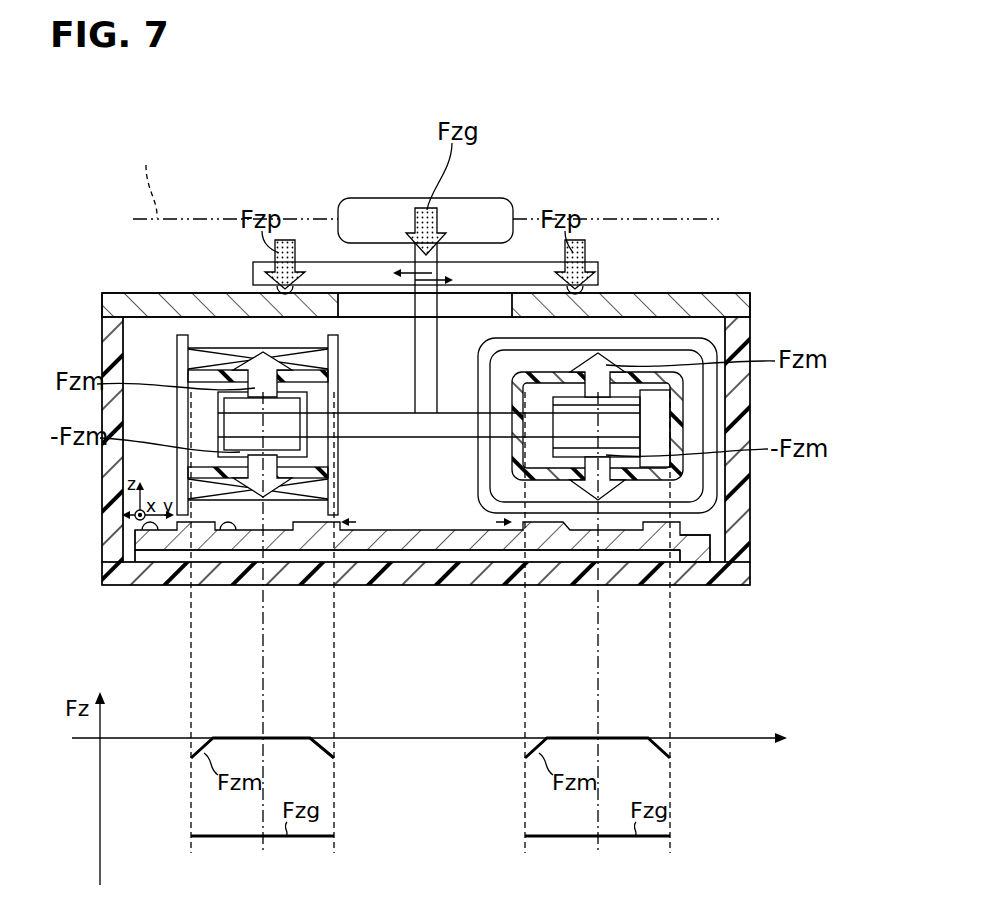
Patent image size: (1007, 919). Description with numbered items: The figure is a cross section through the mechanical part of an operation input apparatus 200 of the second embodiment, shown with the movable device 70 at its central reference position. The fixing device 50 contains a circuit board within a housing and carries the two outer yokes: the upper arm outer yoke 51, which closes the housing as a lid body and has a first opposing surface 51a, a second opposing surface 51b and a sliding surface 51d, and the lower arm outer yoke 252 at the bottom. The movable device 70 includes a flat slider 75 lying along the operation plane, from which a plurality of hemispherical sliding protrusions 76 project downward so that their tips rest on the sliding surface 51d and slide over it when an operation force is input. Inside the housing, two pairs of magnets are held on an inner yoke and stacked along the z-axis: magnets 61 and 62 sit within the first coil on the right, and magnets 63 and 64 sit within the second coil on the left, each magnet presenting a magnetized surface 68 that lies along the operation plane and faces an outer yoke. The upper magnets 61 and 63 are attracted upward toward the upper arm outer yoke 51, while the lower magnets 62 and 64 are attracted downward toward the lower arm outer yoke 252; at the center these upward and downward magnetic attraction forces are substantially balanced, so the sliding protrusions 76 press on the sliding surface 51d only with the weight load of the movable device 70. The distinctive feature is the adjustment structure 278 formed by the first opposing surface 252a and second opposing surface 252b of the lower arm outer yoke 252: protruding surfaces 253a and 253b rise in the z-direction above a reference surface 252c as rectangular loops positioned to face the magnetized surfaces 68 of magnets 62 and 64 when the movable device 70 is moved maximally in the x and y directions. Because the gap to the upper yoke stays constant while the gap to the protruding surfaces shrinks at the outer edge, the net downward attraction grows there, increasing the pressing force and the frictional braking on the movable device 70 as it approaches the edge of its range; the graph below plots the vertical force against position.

The fixing device 50 is at (108, 587).
The upper arm outer yoke 51 is at (110, 292).
The first opposing surface 51a is at (521, 321).
The second opposing surface 51b is at (310, 320).
The sliding surface 51d is at (629, 293).
The magnet 61 is at (640, 393).
The magnet 62 is at (568, 453).
The magnet 63 is at (222, 399).
The magnet 64 is at (235, 454).
The magnetized surface 68 is at (560, 395).
The movable device 70 is at (407, 198).
The slider 75 is at (368, 262).
The sliding protrusions 76 is at (278, 291).
The operation input apparatus 200 is at (696, 190).
The lower arm outer yoke 252 is at (702, 548).
The first opposing surface 252a is at (698, 536).
The second opposing surface 252b is at (150, 530).
The reference surface 252c is at (228, 532).
The protruding surface 253a is at (705, 518).
The protruding surface 253b is at (180, 547).
The adjustment structure 278 is at (350, 527).